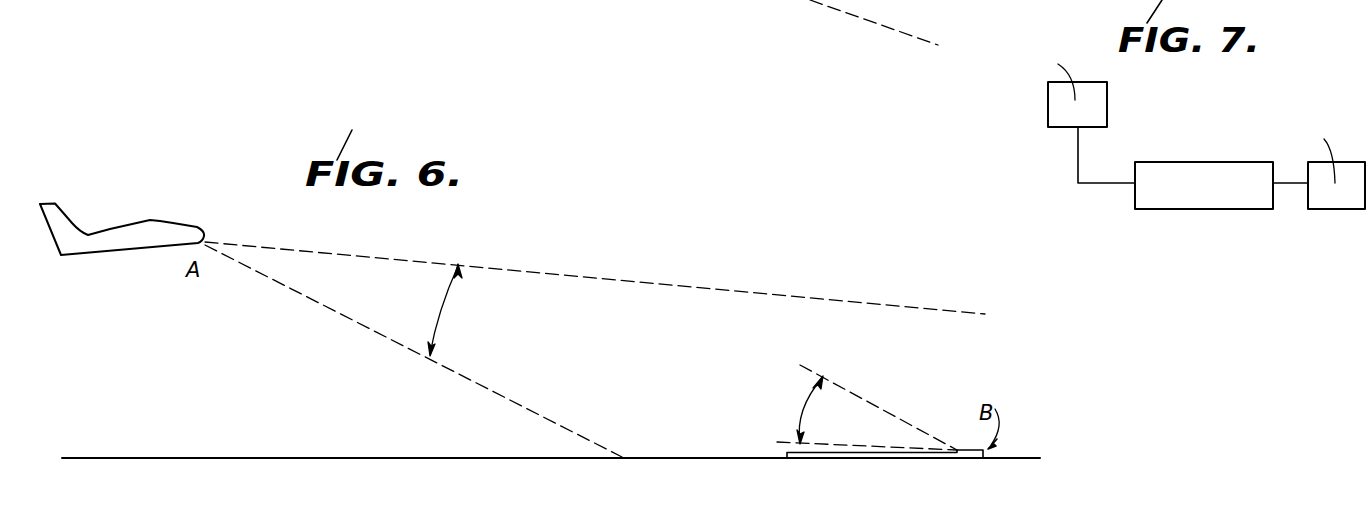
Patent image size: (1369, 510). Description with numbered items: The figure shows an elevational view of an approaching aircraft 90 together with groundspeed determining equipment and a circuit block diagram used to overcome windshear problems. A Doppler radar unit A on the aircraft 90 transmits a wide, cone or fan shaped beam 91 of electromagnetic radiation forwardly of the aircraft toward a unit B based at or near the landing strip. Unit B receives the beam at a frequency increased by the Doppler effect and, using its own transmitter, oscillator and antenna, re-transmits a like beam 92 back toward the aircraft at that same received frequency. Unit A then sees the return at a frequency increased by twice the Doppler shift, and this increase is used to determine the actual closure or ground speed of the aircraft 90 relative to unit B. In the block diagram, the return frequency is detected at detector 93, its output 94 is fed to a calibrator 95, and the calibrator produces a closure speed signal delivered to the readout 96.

In FIG. 6, the aircraft 90 is at (110, 257).
In FIG. 6, the beam 91 is at (453, 310).
In FIG. 6, the like beam 92 is at (819, 410).
In FIG. 7, the detector 93 is at (1107, 105).
In FIG. 7, the output 94 is at (1078, 173).
In FIG. 7, the calibrator 95 is at (1162, 210).
In FIG. 7, the readout 96 is at (1352, 210).